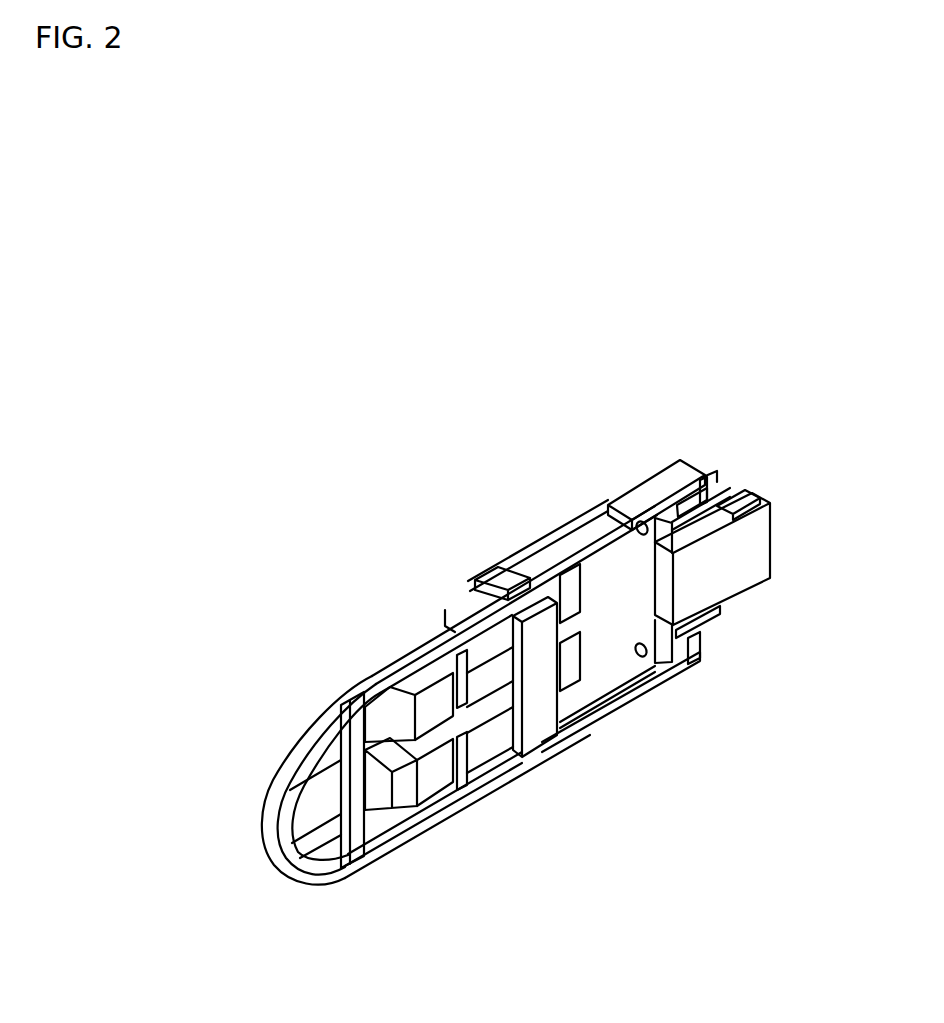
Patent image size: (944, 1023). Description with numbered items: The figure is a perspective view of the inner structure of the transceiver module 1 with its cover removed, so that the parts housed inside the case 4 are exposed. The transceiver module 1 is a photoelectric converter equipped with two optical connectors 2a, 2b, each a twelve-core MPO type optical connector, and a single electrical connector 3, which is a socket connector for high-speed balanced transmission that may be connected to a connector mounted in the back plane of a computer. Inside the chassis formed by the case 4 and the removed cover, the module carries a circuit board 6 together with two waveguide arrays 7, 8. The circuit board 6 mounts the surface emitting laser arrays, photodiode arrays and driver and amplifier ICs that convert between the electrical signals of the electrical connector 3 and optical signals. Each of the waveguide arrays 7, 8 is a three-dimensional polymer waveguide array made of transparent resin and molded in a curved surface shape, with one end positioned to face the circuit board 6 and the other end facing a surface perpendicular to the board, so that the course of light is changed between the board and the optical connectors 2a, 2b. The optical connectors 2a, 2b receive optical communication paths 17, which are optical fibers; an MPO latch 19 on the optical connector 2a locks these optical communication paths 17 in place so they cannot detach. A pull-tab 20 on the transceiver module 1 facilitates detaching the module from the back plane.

The transceiver module 1 is at (796, 900).
The optical connector 2a is at (502, 650).
The optical connector 2b is at (503, 750).
The electrical connector 3 is at (760, 575).
The case 4 is at (598, 520).
The circuit board 6 is at (662, 688).
The waveguide array 7 is at (558, 597).
The waveguide array 8 is at (640, 668).
The optical communication path 17 is at (326, 752).
The MPO latch 19 is at (530, 728).
The pull-tab 20 is at (404, 846).